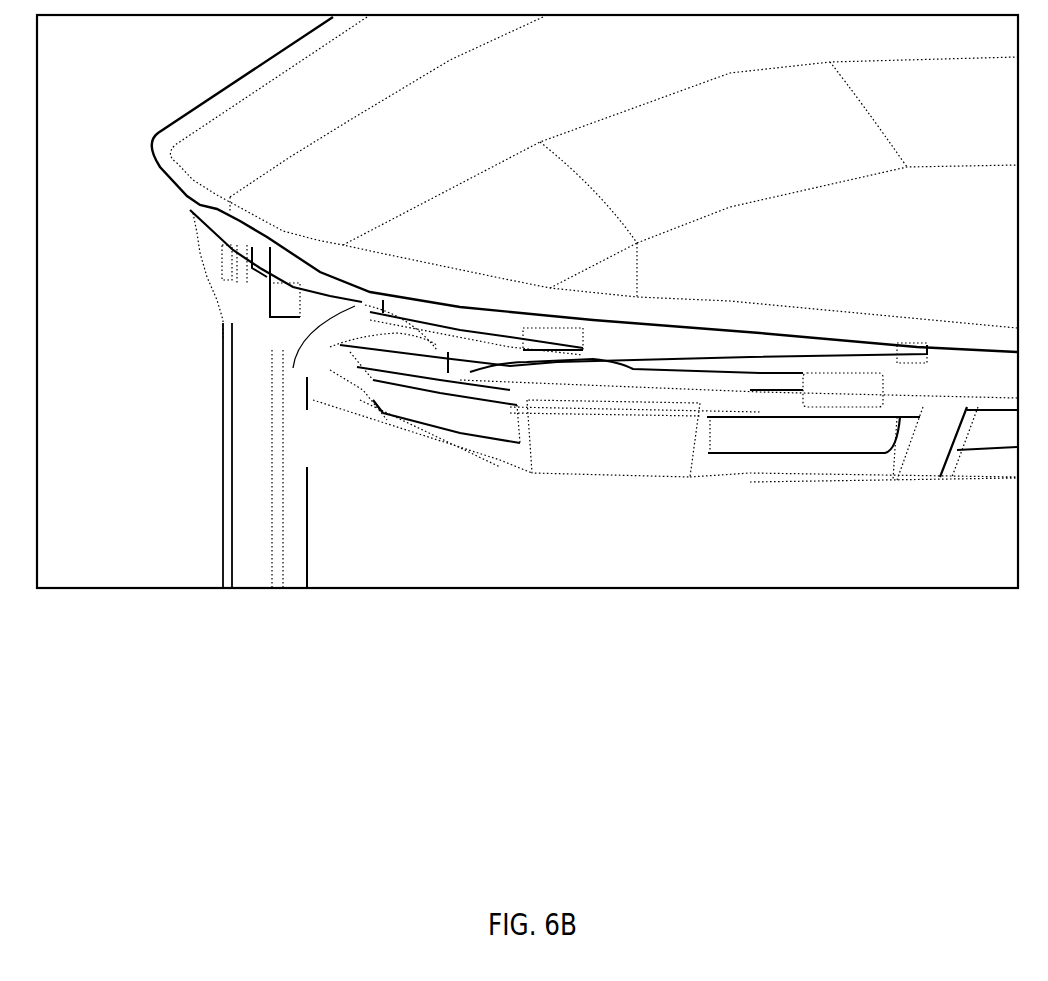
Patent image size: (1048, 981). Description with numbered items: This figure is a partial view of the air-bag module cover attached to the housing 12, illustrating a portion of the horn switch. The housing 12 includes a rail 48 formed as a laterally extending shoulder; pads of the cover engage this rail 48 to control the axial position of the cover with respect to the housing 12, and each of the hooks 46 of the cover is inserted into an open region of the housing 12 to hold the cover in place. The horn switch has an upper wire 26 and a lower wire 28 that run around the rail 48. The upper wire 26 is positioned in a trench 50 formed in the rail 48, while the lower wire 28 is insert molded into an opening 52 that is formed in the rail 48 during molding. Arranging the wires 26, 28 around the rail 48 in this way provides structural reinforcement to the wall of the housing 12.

The housing 12 is at (327, 487).
The upper wire 26 is at (462, 408).
The lower wire 28 is at (645, 392).
The hooks 46 is at (459, 422).
The rail 48 is at (753, 412).
The trench 50 is at (370, 302).
The opening 52 is at (348, 341).